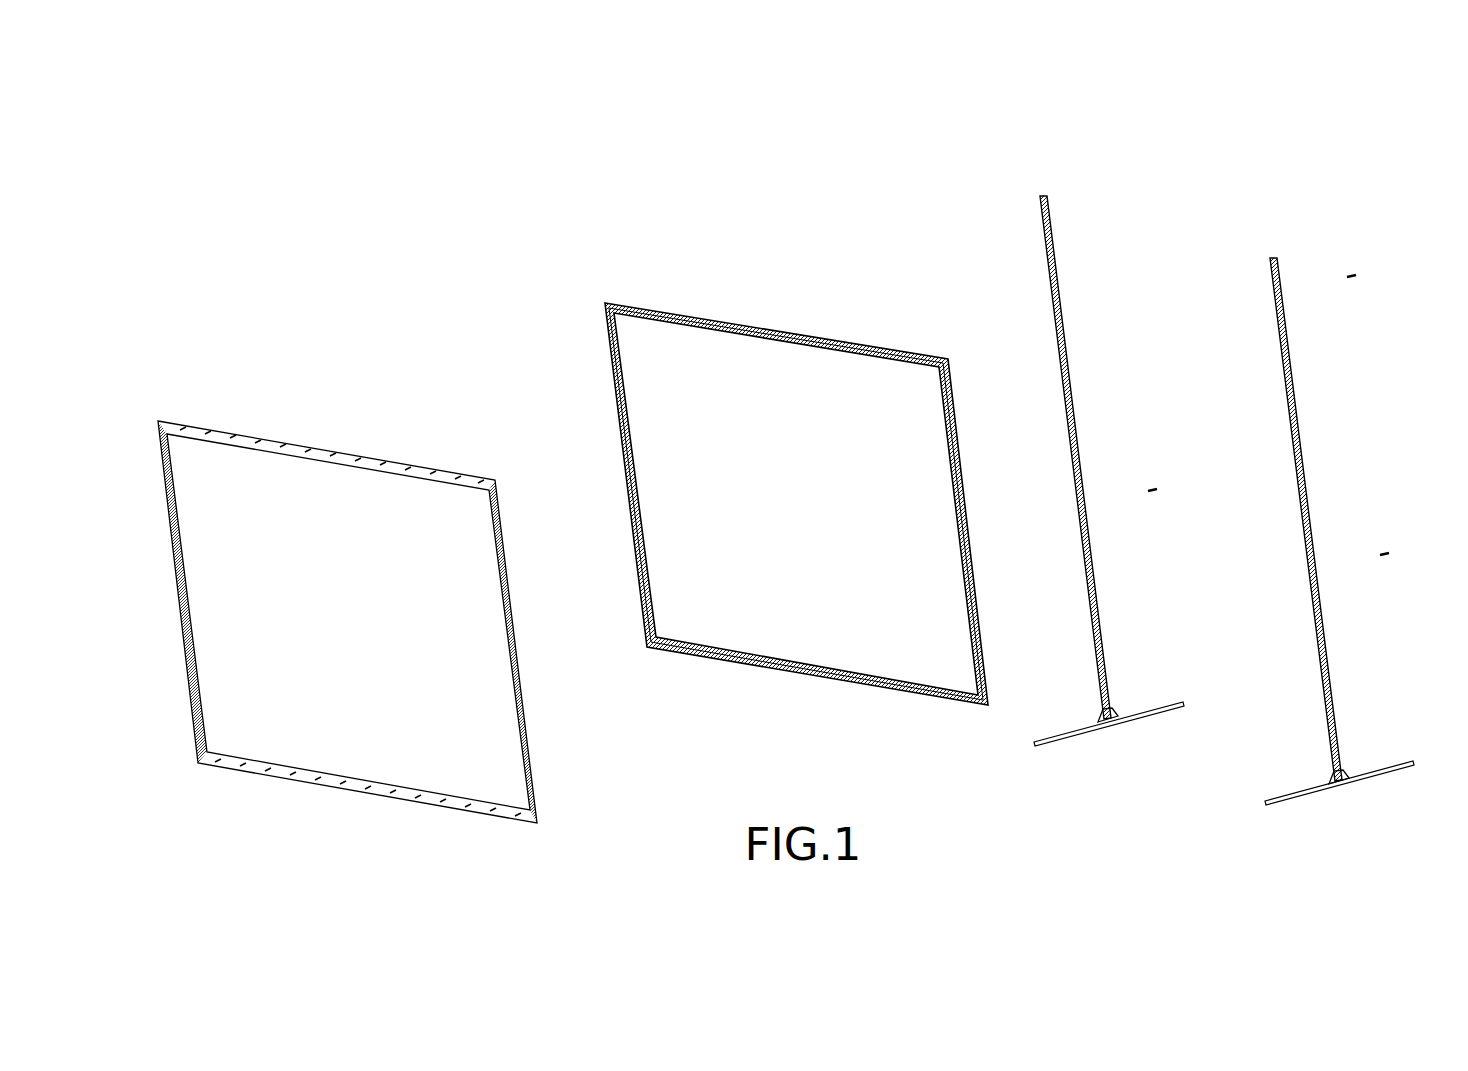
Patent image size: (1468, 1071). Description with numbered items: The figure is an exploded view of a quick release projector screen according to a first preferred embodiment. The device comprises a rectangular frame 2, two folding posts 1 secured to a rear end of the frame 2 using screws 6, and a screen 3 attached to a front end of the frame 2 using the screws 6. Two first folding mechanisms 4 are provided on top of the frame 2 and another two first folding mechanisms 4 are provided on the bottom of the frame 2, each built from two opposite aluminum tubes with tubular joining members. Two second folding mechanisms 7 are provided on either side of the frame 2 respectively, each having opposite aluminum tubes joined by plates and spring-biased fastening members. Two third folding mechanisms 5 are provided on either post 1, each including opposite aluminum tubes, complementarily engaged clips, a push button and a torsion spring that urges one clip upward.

The folding post 1 is at (1045, 247).
The rectangular frame 2 is at (610, 360).
The screen 3 is at (210, 470).
The first folding mechanism 4 is at (718, 325).
The third folding mechanism 5 is at (1072, 374).
The screw 6 is at (1113, 218).
The second folding mechanism 7 is at (628, 477).